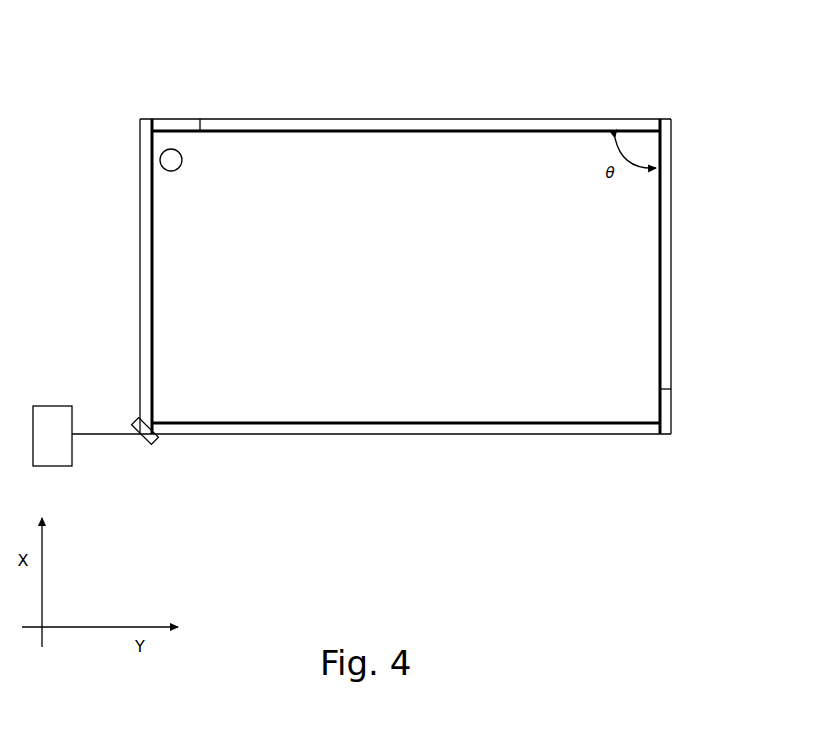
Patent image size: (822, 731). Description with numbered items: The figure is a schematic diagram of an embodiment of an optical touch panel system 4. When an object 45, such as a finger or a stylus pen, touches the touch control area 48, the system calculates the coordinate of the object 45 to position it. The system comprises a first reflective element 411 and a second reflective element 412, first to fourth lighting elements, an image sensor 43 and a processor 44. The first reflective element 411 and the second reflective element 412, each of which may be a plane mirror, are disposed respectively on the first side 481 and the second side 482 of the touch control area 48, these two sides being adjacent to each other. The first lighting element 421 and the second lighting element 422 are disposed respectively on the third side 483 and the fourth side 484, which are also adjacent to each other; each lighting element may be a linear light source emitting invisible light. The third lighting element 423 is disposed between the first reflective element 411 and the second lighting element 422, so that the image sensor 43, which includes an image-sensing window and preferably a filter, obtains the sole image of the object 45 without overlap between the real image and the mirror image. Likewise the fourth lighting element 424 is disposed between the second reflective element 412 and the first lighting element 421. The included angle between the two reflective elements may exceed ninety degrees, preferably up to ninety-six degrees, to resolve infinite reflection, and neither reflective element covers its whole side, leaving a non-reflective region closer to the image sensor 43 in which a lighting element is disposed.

The optical touch panel system 4 is at (688, 61).
The image sensor 43 is at (152, 445).
The processor 44 is at (52, 405).
The object 45 is at (163, 166).
The touch control area 48 is at (405, 402).
The first reflective element 411 is at (425, 125).
The second reflective element 412 is at (665, 338).
The first lighting element 421 is at (545, 424).
The second lighting element 422 is at (145, 220).
The third lighting element 423 is at (173, 125).
The fourth lighting element 424 is at (666, 408).
The first side 481 is at (318, 130).
The second side 482 is at (665, 230).
The third side 483 is at (297, 424).
The fourth side 484 is at (152, 265).